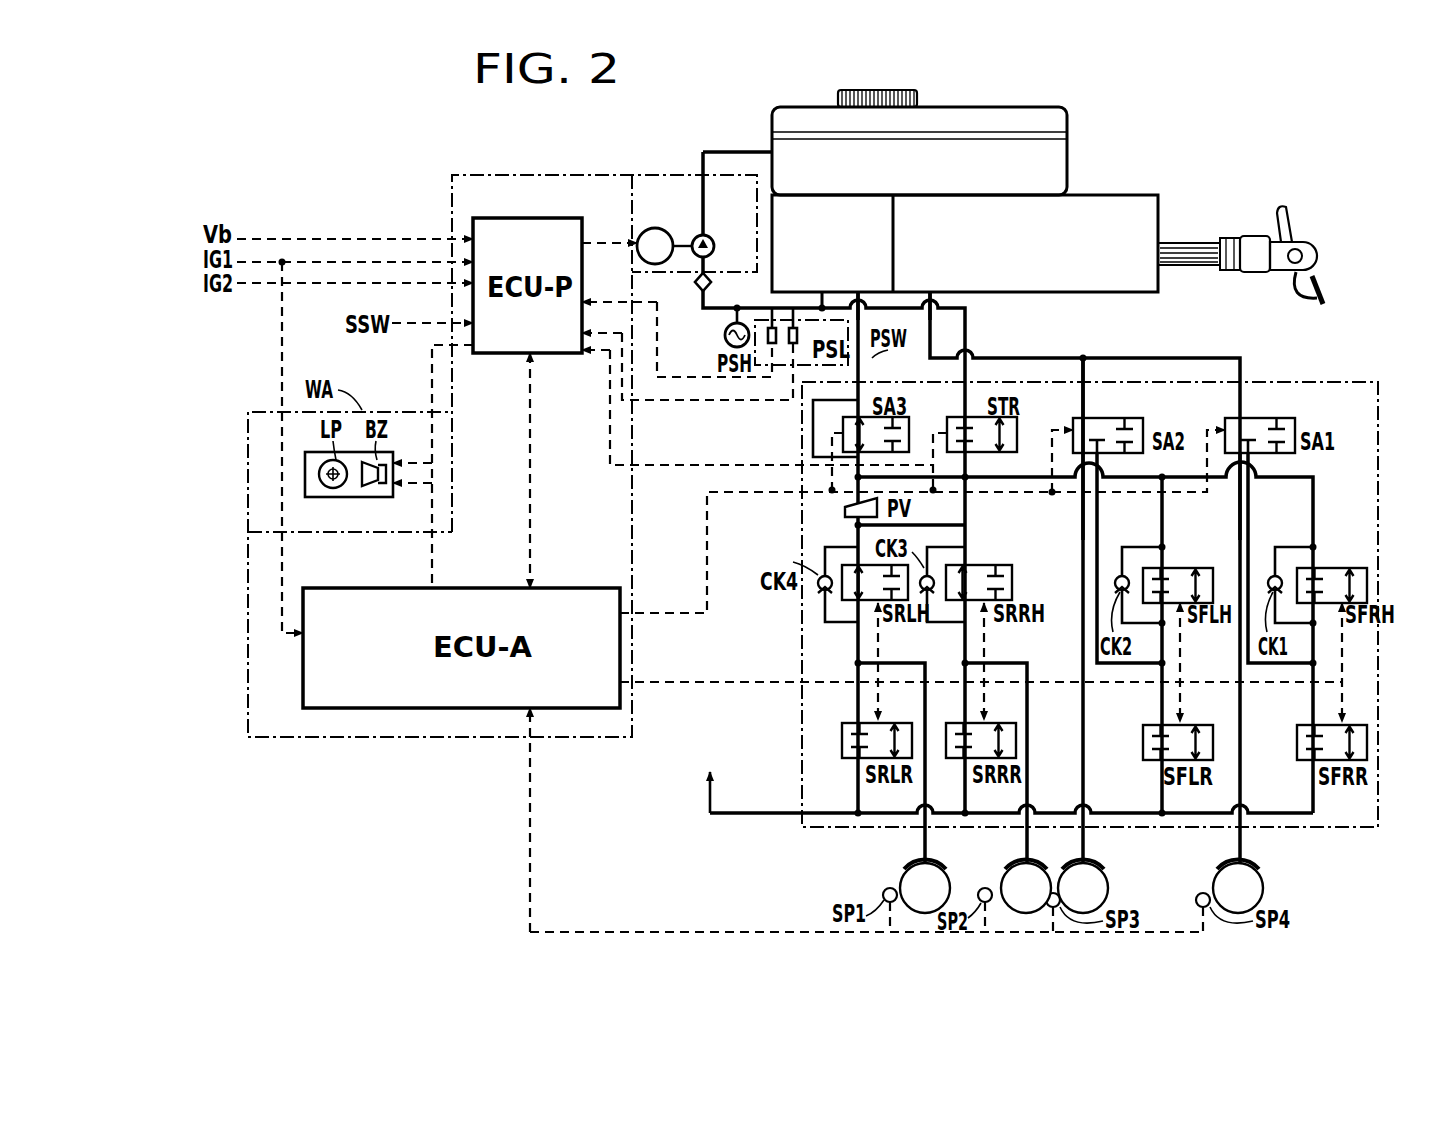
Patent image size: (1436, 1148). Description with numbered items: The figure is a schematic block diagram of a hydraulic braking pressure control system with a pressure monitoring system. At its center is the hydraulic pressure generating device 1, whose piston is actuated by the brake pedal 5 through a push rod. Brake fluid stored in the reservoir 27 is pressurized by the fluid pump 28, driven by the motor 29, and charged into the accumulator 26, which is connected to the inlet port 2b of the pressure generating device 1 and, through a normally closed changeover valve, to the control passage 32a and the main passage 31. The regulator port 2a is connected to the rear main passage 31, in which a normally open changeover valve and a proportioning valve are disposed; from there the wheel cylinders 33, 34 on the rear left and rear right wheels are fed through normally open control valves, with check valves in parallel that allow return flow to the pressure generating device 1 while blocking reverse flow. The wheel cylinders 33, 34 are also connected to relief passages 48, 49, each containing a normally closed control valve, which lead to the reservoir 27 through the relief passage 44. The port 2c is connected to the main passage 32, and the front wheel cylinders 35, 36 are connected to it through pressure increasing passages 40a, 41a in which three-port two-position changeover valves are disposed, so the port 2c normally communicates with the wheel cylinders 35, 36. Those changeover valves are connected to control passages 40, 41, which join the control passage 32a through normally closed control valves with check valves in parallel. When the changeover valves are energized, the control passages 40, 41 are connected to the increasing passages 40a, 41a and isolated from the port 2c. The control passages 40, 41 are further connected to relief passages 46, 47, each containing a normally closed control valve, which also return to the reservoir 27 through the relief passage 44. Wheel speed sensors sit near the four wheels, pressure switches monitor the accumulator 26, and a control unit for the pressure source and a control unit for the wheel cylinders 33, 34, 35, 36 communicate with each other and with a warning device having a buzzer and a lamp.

The hydraulic pressure generating device 1 is at (1132, 297).
The regulator port 2a is at (862, 292).
The inlet port 2b is at (821, 286).
The port 2c is at (933, 292).
The brake pedal 5 is at (1325, 286).
The accumulator 26 is at (724, 336).
The reservoir 27 is at (772, 142).
The fluid pump 28 is at (712, 237).
The motor 29 is at (661, 228).
The main passage 31 is at (843, 513).
The main passage 32 is at (1007, 360).
The control passage 32a is at (1035, 472).
The wheel cylinder 33 is at (910, 861).
The wheel cylinder 34 is at (1011, 861).
The wheel cylinder 35 is at (1098, 861).
The wheel cylinder 36 is at (1251, 861).
The control passage 40 is at (1098, 525).
The pressure increasing passage 40a is at (1083, 527).
The control passage 41 is at (1250, 512).
The pressure increasing passage 41a is at (1240, 505).
The relief passage 44 is at (742, 820).
The relief passage 46 is at (1162, 707).
The relief passage 47 is at (1313, 707).
The relief passage 48 is at (858, 714).
The relief passage 49 is at (965, 714).